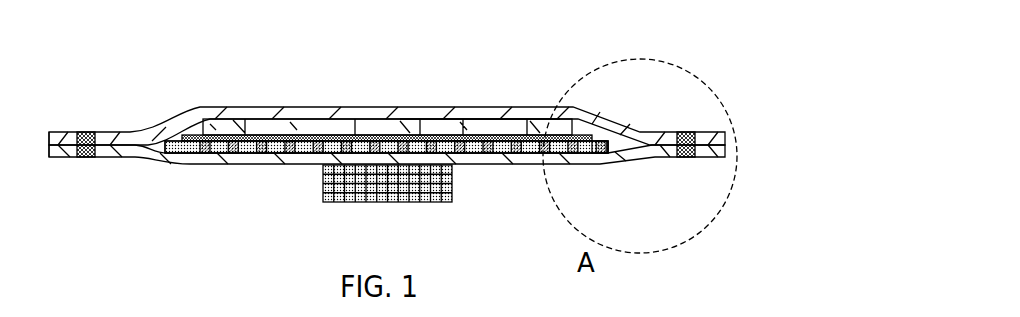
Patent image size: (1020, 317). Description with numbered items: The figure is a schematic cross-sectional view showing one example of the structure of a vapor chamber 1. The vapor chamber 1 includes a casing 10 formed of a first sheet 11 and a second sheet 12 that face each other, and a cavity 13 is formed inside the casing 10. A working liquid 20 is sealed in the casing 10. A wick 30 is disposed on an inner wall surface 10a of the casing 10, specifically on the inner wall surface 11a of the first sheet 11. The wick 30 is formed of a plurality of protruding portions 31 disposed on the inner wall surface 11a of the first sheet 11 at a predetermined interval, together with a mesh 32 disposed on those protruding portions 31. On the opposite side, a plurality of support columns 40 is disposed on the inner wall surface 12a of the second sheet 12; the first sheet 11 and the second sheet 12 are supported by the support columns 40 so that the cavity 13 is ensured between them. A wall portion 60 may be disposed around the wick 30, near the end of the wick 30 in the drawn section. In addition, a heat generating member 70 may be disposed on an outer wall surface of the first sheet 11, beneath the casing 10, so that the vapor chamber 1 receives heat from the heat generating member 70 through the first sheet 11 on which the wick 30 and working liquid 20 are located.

The vapor chamber 1 is at (785, 59).
The casing 10 is at (178, 108).
The inner wall surface of the casing 10a is at (137, 130).
The inner wall surface of the first sheet 11a is at (137, 130).
The first sheet 11 is at (726, 154).
The second sheet 12 is at (726, 134).
The inner wall surface of the second sheet 12a is at (483, 125).
The cavity 13 is at (274, 120).
The working liquid 20 is at (307, 148).
The wick 30 is at (257, 222).
The protruding portions 31 is at (208, 154).
The mesh 32 is at (254, 152).
The support columns 40 is at (335, 136).
The wall portion 60 is at (603, 154).
The heat generating member 70 is at (408, 203).